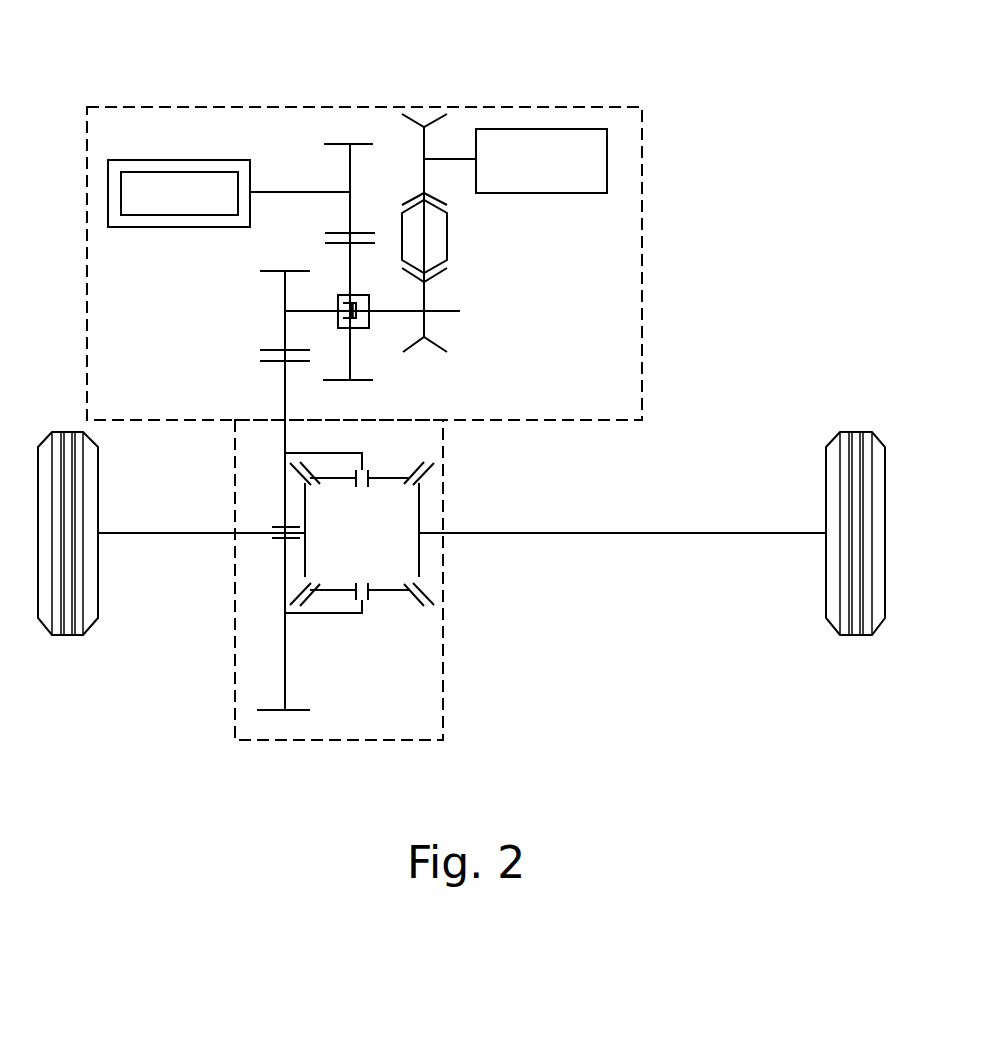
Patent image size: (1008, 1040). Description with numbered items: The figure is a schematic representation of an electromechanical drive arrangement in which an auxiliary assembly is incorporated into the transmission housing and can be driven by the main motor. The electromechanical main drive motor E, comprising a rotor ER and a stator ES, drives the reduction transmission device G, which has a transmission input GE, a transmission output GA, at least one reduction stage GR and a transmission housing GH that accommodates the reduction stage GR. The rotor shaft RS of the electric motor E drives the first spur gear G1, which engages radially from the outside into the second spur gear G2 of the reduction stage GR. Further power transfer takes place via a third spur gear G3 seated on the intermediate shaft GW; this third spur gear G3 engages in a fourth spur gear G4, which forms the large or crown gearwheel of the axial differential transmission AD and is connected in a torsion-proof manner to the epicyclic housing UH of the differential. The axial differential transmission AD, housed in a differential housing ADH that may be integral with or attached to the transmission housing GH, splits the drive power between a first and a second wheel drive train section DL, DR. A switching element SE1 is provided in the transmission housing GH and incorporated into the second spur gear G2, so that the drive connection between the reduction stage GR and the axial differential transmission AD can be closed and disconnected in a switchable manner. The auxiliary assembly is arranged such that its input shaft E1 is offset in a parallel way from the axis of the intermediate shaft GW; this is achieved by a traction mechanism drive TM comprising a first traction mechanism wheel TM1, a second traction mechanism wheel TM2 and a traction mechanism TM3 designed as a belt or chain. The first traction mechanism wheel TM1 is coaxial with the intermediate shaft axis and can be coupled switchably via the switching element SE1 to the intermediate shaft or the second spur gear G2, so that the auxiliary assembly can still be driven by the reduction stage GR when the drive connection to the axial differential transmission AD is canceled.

The electric motor E is at (179, 132).
The stator ES is at (124, 160).
The rotor ER is at (182, 173).
The rotor shaft RS is at (302, 126).
The transmission input GE is at (270, 191).
The reduction transmission device G is at (423, 216).
The transmission housing GH is at (642, 155).
The first spur gear G1 is at (359, 143).
The reduction stage GR is at (306, 236).
The second spur gear G2 is at (373, 381).
The switching element SE1 is at (360, 328).
The third spur gear G3 is at (281, 273).
The intermediate shaft GW is at (285, 311).
The fourth spur gear G4 is at (317, 756).
The transmission output GA is at (297, 712).
The traction mechanism drive TM is at (484, 177).
The first traction mechanism wheel TM1 is at (432, 347).
The second traction mechanism wheel TM2 is at (432, 118).
The traction mechanism TM3 is at (430, 228).
The input shaft of the auxiliary assembly E1 is at (463, 155).
The differential housing ADH is at (443, 645).
The axial differential transmission AD is at (366, 626).
The epicyclic housing UH is at (396, 605).
The first wheel drive train section DL is at (145, 535).
The second wheel drive train section DR is at (745, 535).